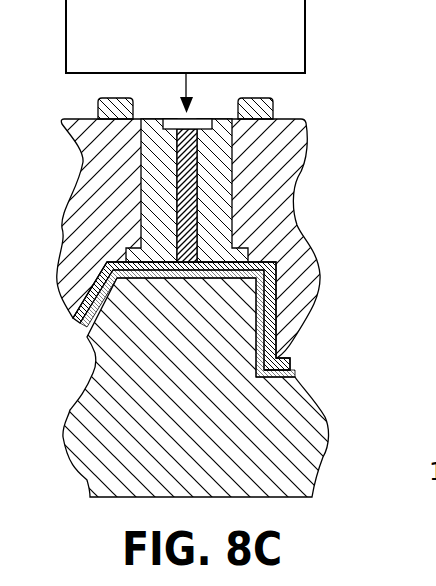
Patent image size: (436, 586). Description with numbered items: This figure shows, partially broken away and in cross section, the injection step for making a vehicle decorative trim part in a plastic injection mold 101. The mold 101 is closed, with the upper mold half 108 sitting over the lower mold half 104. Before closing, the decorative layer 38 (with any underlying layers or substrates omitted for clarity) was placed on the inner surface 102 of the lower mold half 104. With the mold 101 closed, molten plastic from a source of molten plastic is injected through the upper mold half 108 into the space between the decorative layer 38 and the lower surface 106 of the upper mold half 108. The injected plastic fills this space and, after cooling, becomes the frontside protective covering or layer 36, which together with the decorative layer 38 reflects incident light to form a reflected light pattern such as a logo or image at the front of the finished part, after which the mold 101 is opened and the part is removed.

The mold 101 is at (232, 248).
The upper mold half 108 is at (287, 199).
The lower surface of the upper mold half 106 is at (277, 283).
The frontside protective covering or layer 36 is at (277, 303).
The decorative layer 38 is at (322, 373).
The inner surface of the lower mold half 102 is at (207, 379).
The lower mold half 104 is at (297, 448).